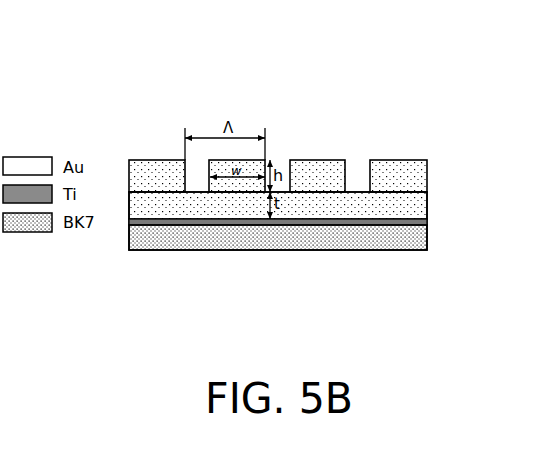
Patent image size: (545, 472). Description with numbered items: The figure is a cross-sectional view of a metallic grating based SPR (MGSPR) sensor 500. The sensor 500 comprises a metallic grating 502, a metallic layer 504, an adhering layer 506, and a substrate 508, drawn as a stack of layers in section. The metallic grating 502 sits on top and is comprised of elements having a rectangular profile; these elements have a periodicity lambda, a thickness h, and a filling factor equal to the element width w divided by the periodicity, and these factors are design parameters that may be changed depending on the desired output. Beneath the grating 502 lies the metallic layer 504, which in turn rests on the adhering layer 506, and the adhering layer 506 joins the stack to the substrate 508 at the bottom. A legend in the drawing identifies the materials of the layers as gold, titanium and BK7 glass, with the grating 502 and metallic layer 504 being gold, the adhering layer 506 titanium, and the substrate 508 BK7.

The metallic grating based SPR (MGSPR) sensor 500 is at (446, 92).
The metallic grating 502 is at (138, 175).
The metallic layer 504 is at (338, 214).
The adhering layer 506 is at (413, 222).
The substrate 508 is at (338, 246).